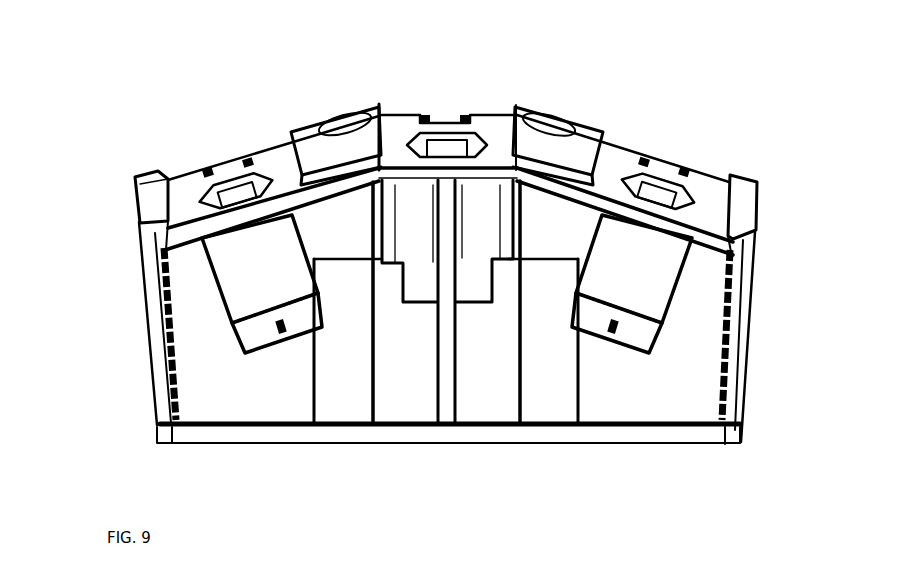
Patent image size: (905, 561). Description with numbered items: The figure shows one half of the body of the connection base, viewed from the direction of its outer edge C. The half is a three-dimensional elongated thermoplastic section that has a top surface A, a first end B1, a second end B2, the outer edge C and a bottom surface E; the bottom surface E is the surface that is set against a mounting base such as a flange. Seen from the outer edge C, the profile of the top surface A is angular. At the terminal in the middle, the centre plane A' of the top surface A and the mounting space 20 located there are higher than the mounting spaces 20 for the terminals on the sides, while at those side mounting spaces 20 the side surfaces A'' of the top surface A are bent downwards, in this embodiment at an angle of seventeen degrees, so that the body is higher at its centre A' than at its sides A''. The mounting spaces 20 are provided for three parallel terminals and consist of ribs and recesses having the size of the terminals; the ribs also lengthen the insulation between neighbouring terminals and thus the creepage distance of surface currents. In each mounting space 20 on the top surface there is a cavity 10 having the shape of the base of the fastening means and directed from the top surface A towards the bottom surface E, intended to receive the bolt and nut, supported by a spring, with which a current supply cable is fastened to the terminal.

The cavity 10 is at (238, 195).
The mounting space 20 is at (193, 190).
The top surface A is at (401, 159).
The centre plane of the top surface A' is at (448, 100).
The side surfaces of the top surface A'' is at (449, 148).
The first end B1 is at (763, 370).
The second end B2 is at (138, 381).
The outer edge C is at (343, 403).
The bottom surface E is at (591, 447).